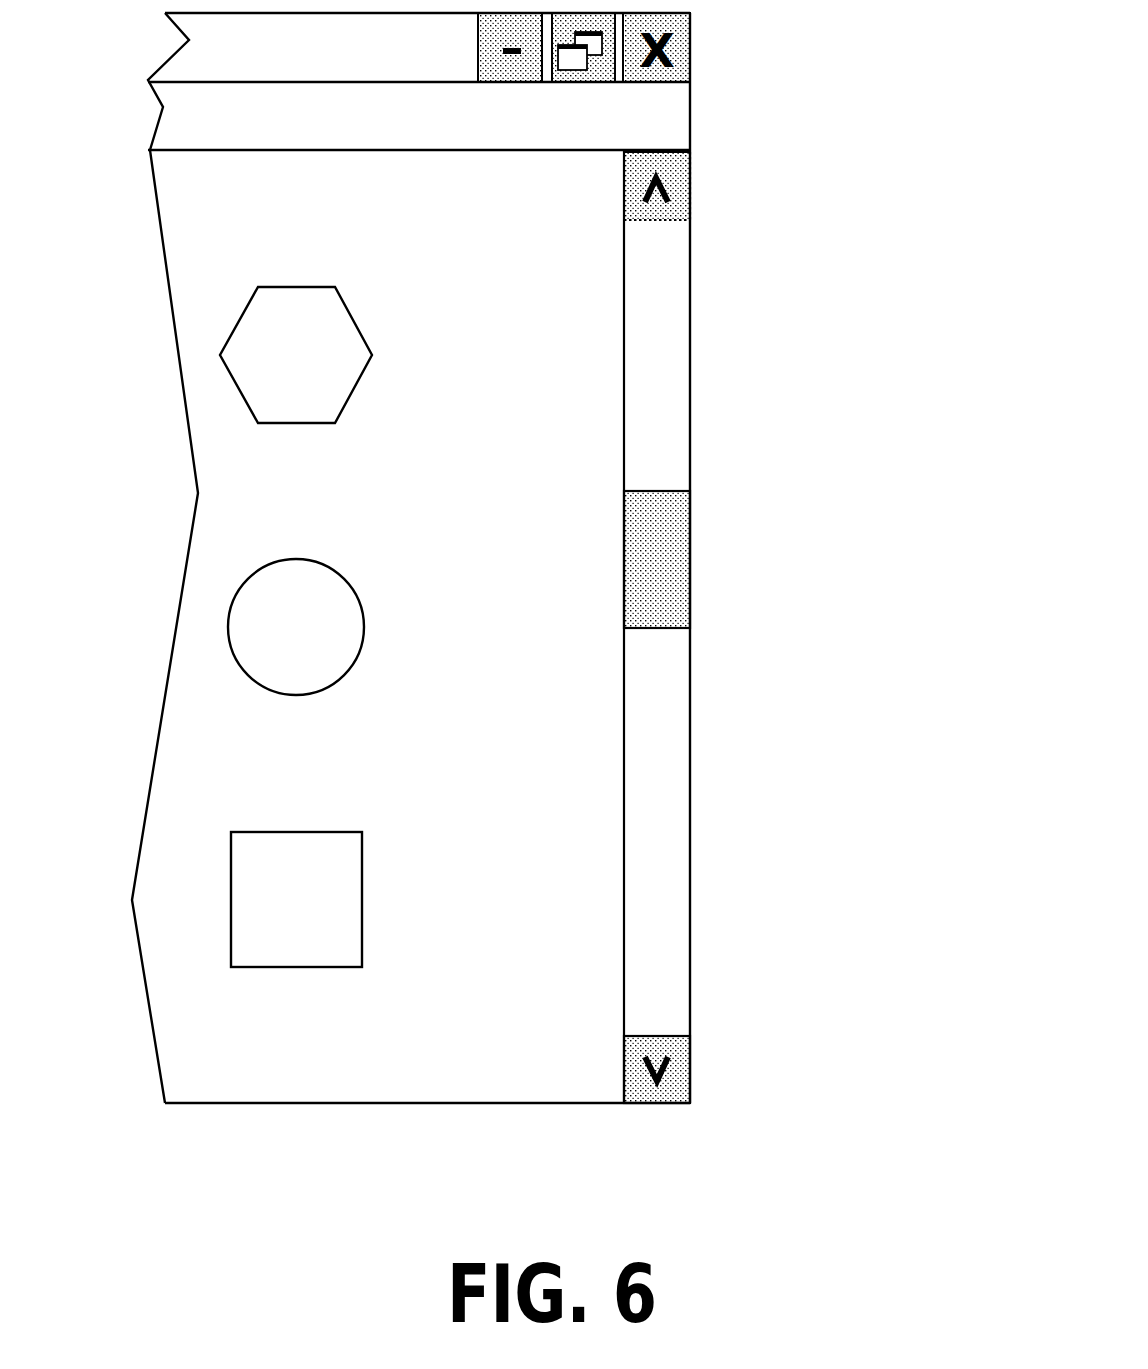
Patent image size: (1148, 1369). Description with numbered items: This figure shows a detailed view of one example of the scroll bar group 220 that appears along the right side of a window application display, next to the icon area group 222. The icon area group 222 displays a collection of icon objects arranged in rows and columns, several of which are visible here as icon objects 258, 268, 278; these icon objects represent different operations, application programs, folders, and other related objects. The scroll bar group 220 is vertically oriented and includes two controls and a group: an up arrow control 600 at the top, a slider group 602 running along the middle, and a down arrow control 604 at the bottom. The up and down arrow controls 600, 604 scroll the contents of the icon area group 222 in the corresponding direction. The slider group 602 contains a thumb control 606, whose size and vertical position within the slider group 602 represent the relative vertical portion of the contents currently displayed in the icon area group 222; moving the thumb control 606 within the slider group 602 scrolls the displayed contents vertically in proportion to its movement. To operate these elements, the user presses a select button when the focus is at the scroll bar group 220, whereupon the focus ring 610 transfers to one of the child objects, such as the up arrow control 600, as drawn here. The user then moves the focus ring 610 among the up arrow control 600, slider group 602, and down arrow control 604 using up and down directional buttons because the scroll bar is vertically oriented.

The scroll bar group 220 is at (690, 373).
The icon area group 222 is at (563, 1005).
The up arrow control 600 is at (680, 180).
The slider group 602 is at (655, 740).
The down arrow control 604 is at (685, 1070).
The thumb control 606 is at (680, 558).
The focus ring 610 is at (657, 221).
The icon object 258 is at (296, 355).
The icon object 268 is at (296, 627).
The icon object 278 is at (296, 899).